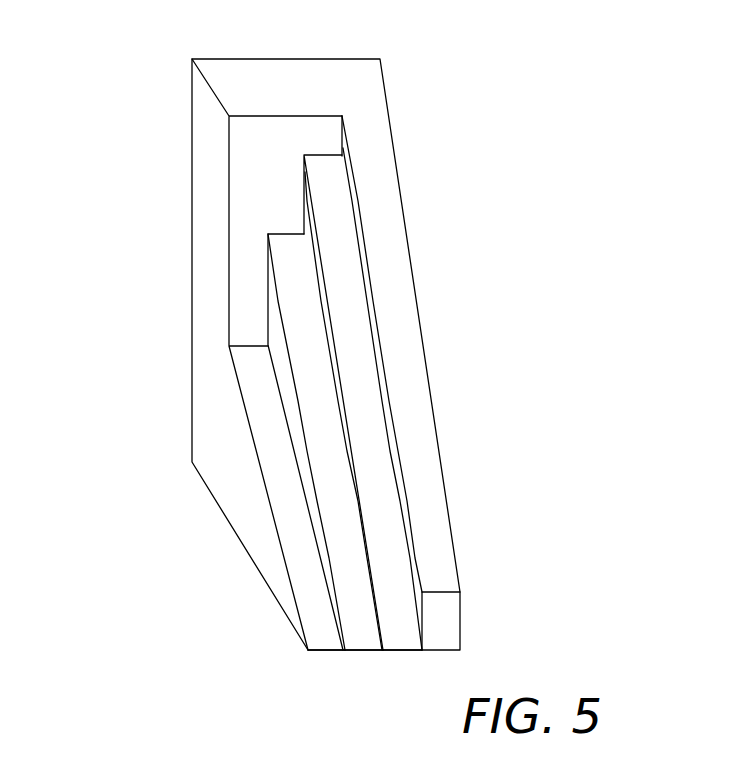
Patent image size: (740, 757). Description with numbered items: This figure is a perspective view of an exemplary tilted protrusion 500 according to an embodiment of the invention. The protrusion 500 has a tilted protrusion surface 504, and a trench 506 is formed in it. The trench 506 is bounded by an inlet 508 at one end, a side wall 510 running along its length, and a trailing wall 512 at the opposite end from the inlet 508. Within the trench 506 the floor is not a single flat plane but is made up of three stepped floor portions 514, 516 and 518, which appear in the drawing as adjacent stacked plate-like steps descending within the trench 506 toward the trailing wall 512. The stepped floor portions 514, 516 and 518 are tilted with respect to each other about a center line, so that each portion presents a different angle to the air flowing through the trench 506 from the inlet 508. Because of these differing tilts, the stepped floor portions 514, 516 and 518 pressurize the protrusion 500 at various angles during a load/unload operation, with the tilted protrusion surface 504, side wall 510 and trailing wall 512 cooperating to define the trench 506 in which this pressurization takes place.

The protrusion 500 is at (158, 139).
The tilted protrusion surface 504 is at (386, 195).
The trench 506 is at (250, 365).
The inlet 508 is at (273, 508).
The side wall 510 is at (385, 363).
The trailing wall 512 is at (277, 115).
The stepped floor portion 514 is at (328, 640).
The stepped floor portion 516 is at (360, 637).
The stepped floor portion 518 is at (398, 637).